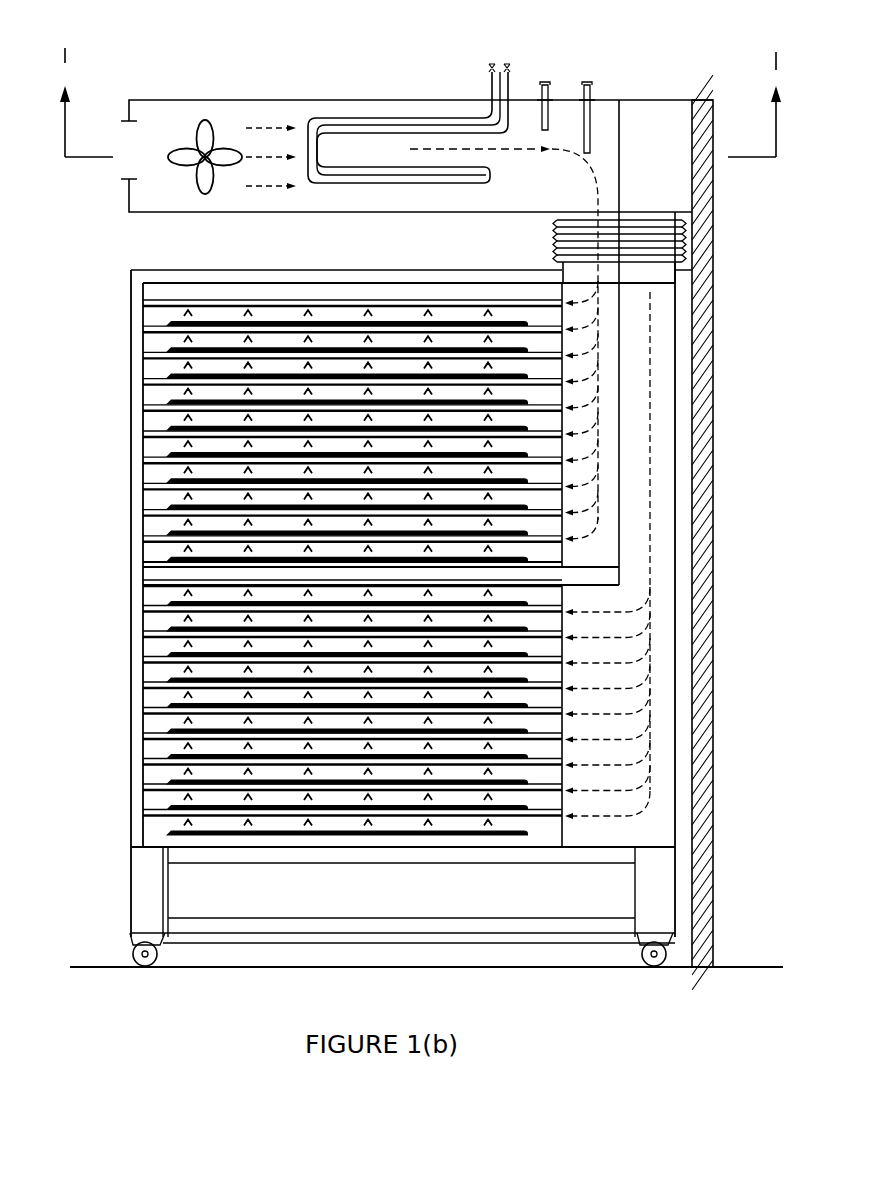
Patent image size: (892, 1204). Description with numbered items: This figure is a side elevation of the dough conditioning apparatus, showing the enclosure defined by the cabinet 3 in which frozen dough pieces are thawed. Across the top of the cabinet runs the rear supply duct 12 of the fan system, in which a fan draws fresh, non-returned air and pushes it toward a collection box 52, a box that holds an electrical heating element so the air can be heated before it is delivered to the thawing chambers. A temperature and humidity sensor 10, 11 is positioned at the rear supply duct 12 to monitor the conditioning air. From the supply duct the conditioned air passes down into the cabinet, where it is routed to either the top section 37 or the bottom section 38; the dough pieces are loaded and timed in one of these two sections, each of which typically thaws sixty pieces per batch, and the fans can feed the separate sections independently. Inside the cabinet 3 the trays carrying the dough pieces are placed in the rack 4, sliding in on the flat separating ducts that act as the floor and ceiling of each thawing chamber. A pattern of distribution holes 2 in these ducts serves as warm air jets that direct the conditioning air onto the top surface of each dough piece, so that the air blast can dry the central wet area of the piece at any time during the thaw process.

The distribution holes 2 is at (187, 337).
The cabinet 3 is at (700, 107).
The rack 4 is at (135, 293).
The temperature and humidity sensor 10 is at (592, 82).
The temperature and humidity sensor 11 is at (545, 82).
The rear supply duct 12 is at (172, 117).
The top section 37 is at (603, 473).
The bottom section 38 is at (657, 640).
The collection box 52 is at (297, 117).